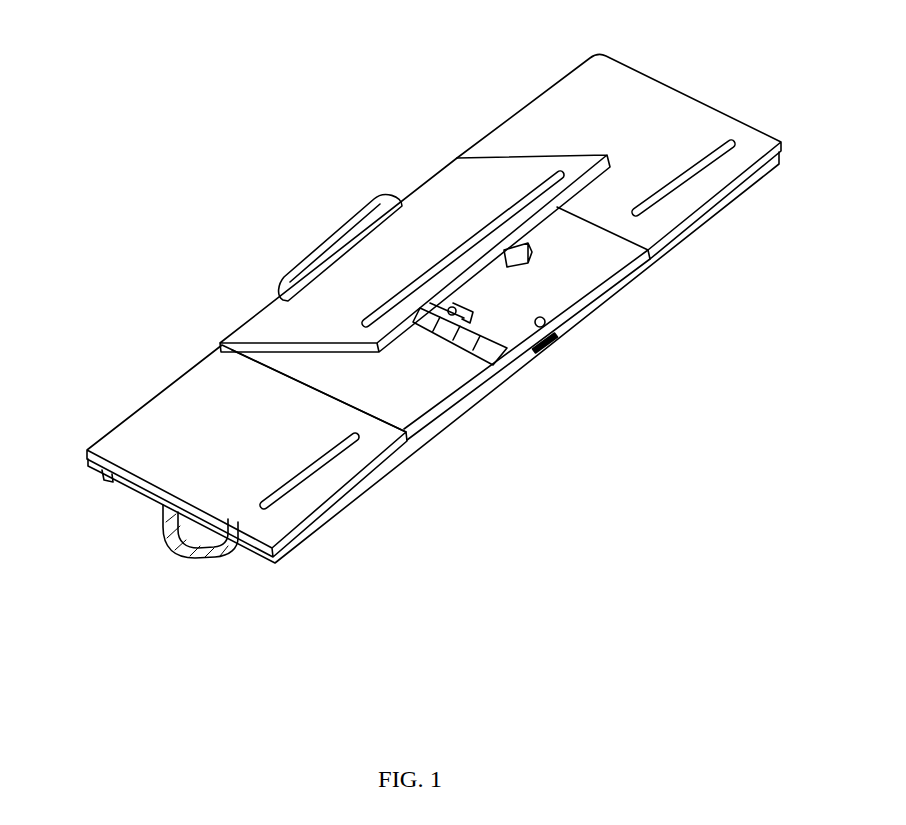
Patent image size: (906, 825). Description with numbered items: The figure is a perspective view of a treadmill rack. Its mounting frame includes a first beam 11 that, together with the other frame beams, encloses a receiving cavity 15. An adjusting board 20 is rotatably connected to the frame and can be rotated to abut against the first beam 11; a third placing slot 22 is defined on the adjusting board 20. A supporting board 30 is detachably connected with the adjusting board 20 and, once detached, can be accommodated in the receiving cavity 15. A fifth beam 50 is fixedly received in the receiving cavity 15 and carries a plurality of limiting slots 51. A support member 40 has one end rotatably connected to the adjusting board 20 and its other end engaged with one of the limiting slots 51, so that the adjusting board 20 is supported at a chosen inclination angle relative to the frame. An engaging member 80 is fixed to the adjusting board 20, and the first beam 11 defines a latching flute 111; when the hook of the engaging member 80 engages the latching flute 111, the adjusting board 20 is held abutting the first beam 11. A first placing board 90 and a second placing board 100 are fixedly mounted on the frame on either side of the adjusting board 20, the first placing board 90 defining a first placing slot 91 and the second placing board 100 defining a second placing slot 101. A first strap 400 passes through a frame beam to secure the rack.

The first beam 11 is at (480, 393).
The receiving cavity 15 is at (362, 394).
The adjusting board 20 is at (288, 323).
The third placing slot 22 is at (490, 230).
The supporting board 30 is at (340, 245).
The support member 40 is at (428, 330).
The fifth beam 50 is at (493, 345).
The limiting slots 51 is at (470, 330).
The engaging member 80 is at (517, 256).
The first placing board 90 is at (185, 411).
The first placing slot 91 is at (310, 470).
The second placing board 100 is at (605, 105).
The second placing slot 101 is at (686, 178).
The latching flute 111 is at (548, 344).
The first strap 400 is at (128, 468).